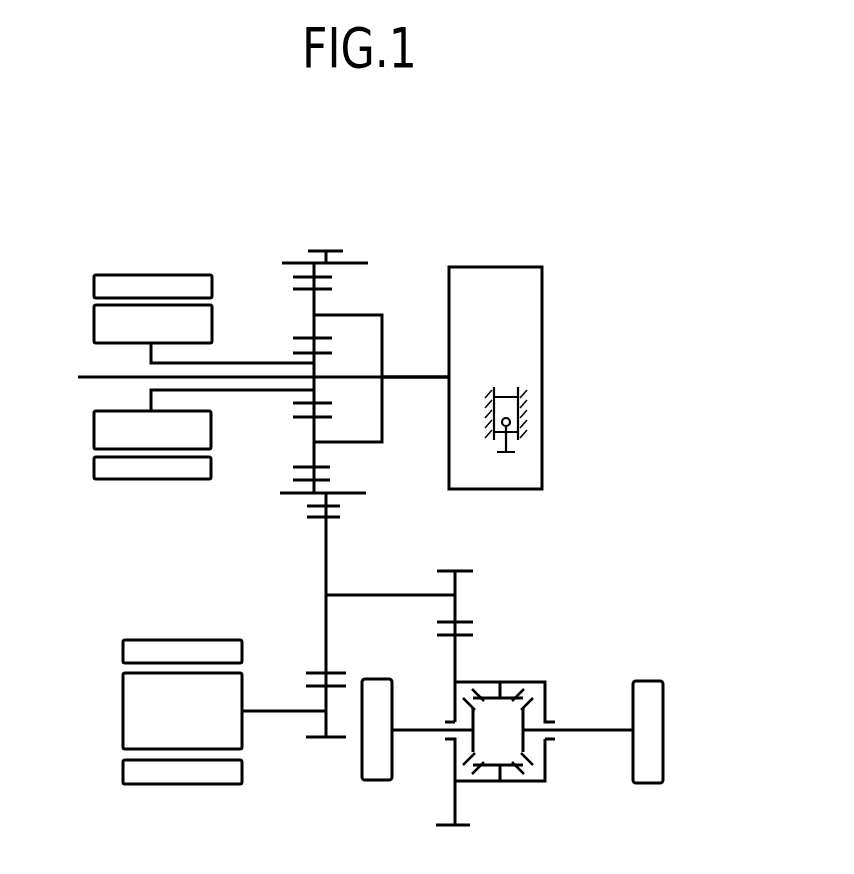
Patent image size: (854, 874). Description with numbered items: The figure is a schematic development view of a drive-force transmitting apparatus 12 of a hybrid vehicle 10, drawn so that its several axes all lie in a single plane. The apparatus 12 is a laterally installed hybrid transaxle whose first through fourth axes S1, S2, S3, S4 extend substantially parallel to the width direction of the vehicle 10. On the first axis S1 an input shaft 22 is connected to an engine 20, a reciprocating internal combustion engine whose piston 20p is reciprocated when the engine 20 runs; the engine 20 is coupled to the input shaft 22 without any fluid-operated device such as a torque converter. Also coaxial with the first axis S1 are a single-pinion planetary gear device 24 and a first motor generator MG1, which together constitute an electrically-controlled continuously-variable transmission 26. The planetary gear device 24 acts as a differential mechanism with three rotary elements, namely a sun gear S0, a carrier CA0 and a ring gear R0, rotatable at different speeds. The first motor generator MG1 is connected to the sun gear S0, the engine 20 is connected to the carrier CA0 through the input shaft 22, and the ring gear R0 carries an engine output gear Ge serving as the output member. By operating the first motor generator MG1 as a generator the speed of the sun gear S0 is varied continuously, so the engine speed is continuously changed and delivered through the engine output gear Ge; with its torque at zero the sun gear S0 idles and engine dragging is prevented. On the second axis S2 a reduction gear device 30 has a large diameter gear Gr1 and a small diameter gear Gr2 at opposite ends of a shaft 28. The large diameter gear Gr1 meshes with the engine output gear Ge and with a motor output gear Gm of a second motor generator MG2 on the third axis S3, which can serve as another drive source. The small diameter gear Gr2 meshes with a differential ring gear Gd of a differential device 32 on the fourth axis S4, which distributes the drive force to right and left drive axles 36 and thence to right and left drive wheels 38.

The hybrid vehicle 10 is at (513, 172).
The drive-force transmitting apparatus 12 is at (160, 173).
The engine 20 is at (532, 328).
The piston 20p is at (508, 405).
The input shaft 22 is at (413, 380).
The planetary gear device 24 is at (248, 483).
The electrically-controlled continuously-variable transmission 26 is at (347, 200).
The shaft 28 is at (377, 600).
The reduction gear device 30 is at (525, 583).
The differential device 32 is at (533, 798).
The drive axles 36 is at (418, 732).
The drive wheels 38 is at (377, 770).
The first axis S1 is at (245, 377).
The second axis S2 is at (369, 594).
The third axis S3 is at (208, 713).
The fourth axis S4 is at (687, 733).
The first motor generator MG1 is at (204, 363).
The second motor generator MG2 is at (182, 700).
The engine output gear Ge is at (319, 249).
The sun gear S0 is at (300, 349).
The carrier CA0 is at (353, 312).
The ring gear R0 is at (328, 477).
The large diameter gear Gr1 is at (338, 517).
The small diameter gear Gr2 is at (457, 562).
The differential ring gear Gd is at (467, 630).
The motor output gear Gm is at (317, 741).